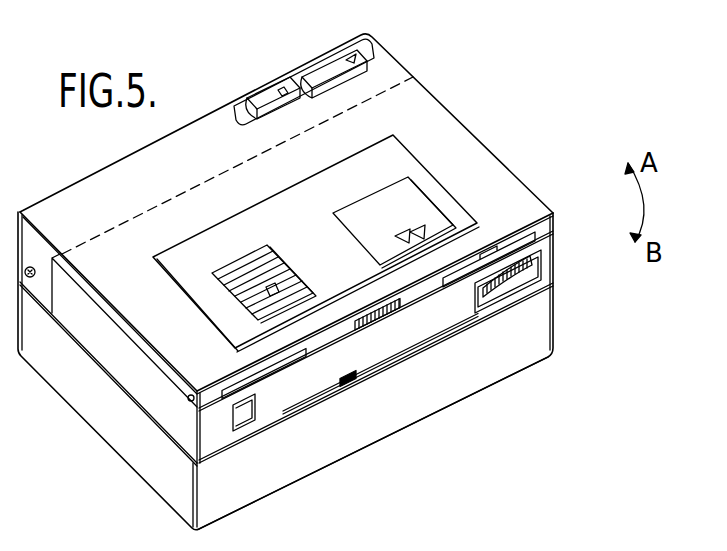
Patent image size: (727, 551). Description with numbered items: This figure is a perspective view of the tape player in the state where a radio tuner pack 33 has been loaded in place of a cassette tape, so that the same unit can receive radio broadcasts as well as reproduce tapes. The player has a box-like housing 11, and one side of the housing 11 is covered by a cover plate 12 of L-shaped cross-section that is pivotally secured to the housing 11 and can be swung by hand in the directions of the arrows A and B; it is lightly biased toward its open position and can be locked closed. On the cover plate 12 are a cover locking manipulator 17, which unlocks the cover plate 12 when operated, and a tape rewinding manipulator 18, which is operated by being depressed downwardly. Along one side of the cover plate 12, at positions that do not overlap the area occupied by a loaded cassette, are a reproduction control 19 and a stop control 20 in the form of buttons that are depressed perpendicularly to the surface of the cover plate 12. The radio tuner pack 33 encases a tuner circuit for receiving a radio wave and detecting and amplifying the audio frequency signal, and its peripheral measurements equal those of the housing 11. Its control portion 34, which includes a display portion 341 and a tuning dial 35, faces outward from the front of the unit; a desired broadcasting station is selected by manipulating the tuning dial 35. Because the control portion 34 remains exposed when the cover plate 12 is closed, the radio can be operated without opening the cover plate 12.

The housing 11 is at (103, 430).
The cover plate 12 is at (470, 120).
The cover locking manipulator 17 is at (274, 256).
The tape rewinding manipulator 18 is at (368, 200).
The reproduction control 19 is at (330, 63).
The stop control 20 is at (268, 94).
The radio tuner pack 33 is at (178, 432).
The control portion 34 is at (258, 430).
The tuning dial 35 is at (533, 263).
The display portion 341 is at (380, 372).